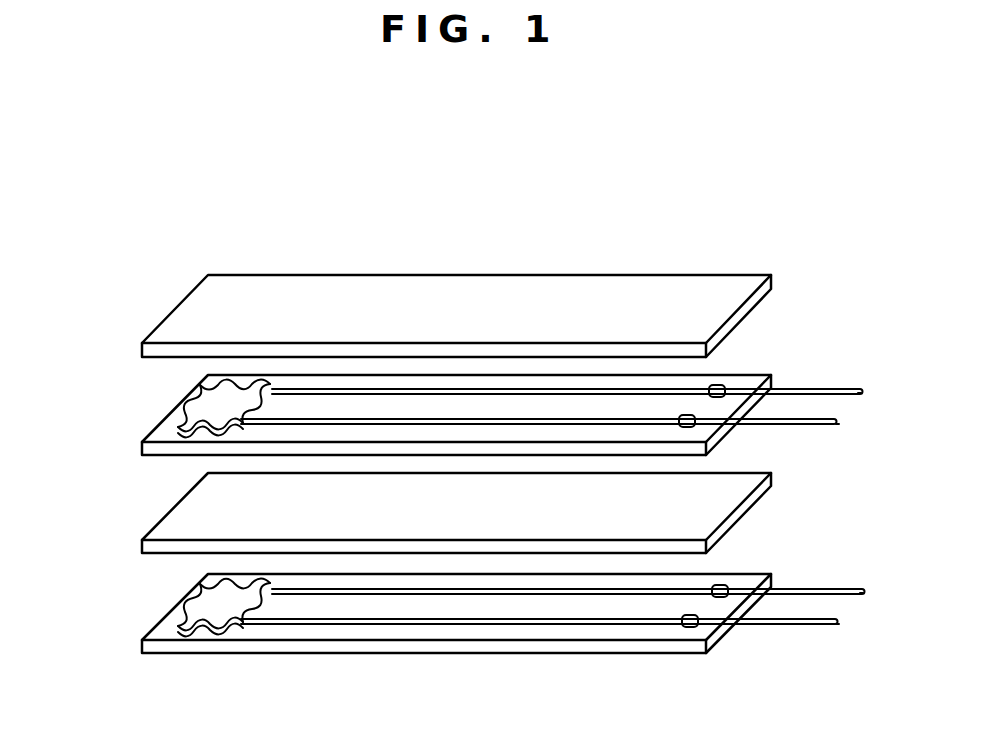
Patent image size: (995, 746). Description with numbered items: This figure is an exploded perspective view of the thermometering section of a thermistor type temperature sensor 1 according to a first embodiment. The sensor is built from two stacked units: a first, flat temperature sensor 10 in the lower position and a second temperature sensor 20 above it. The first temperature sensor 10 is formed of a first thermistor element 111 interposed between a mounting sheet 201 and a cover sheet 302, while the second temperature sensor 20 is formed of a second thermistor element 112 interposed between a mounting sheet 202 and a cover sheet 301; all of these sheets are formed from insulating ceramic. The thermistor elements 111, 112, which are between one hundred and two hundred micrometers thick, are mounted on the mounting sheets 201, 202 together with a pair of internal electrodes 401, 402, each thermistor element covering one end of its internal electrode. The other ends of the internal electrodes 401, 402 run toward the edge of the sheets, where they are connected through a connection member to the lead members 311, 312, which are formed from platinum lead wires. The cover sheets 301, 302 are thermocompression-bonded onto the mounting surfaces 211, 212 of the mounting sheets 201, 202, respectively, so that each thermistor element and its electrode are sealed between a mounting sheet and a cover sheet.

The thermistor type temperature sensor 1 is at (572, 250).
The first temperature sensor 10 is at (99, 558).
The second temperature sensor 20 is at (97, 321).
The first thermistor element 111 is at (205, 610).
The second thermistor element 112 is at (192, 408).
The mounting sheet 201 is at (390, 645).
The mounting sheet 202 is at (143, 437).
The mounting surface 211 is at (262, 630).
The mounting surface 212 is at (656, 393).
The cover sheet 301 is at (371, 295).
The cover sheet 302 is at (185, 523).
The lead member 311 is at (856, 597).
The lead member 312 is at (856, 398).
The internal electrode 401 is at (697, 590).
The internal electrode 402 is at (302, 392).